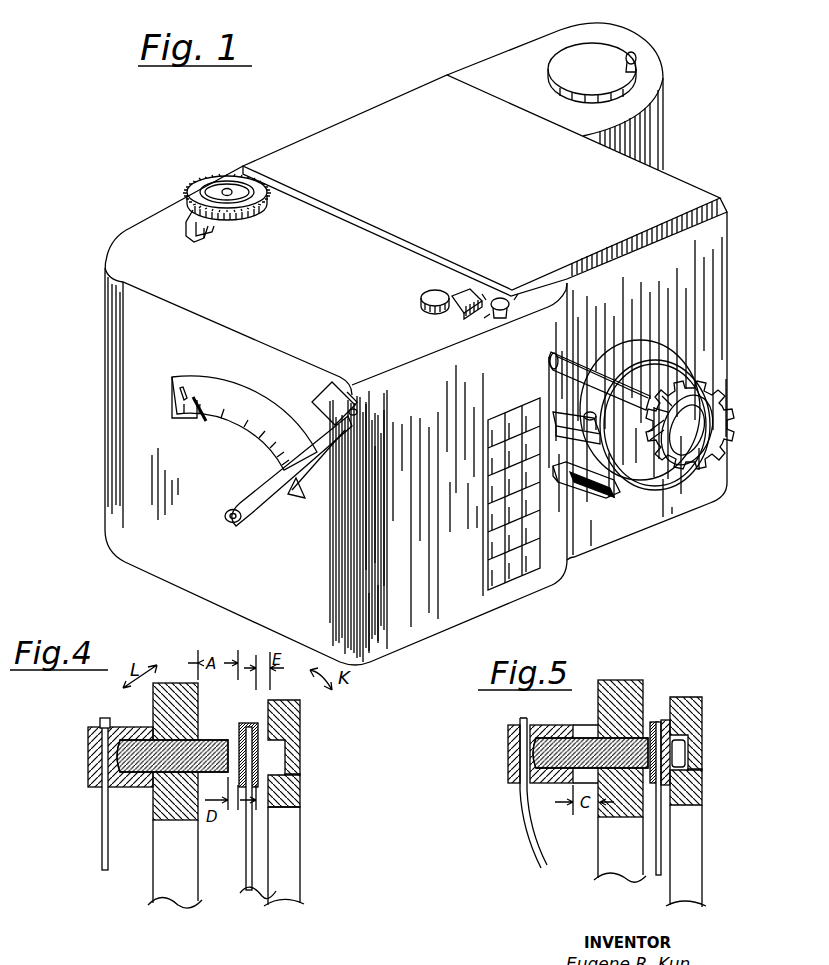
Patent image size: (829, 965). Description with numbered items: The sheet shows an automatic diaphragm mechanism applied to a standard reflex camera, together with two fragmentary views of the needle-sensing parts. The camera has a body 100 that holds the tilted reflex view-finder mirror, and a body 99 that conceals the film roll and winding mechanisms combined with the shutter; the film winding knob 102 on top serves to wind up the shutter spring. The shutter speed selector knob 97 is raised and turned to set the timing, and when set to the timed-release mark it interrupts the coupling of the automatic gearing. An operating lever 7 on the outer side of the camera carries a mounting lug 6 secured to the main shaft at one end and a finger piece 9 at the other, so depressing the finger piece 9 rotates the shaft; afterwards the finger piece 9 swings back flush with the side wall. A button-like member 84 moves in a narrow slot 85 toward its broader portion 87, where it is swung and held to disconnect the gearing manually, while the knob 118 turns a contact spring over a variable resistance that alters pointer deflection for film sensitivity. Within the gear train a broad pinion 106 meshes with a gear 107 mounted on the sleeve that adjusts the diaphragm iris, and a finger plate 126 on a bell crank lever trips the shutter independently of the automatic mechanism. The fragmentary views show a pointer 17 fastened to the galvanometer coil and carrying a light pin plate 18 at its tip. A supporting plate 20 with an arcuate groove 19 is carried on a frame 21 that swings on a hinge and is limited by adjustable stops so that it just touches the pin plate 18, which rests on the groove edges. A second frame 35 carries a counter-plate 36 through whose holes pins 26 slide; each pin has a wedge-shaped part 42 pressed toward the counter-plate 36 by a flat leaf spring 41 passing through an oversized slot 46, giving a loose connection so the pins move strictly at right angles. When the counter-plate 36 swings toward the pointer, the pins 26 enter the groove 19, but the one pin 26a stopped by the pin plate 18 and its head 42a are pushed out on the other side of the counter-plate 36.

In FIG. 1, the body of the camera 100 is at (715, 246).
In FIG. 1, the body 99 is at (655, 152).
In FIG. 1, the film winding knob 102 is at (605, 50).
In FIG. 1, the shutter speed selector knob 97 is at (202, 190).
In FIG. 1, the button-like member 84 is at (428, 296).
In FIG. 1, the narrow slot 85 is at (432, 312).
In FIG. 1, the broader portion of slot 87 is at (470, 316).
In FIG. 1, the knob 118 is at (510, 302).
In FIG. 1, the supporting plate 20 is at (215, 380).
In FIG. 4, the supporting plate 20 is at (292, 792).
In FIG. 5, the supporting plate 20 is at (692, 788).
In FIG. 1, the pointer 17 is at (198, 413).
In FIG. 4, the pointer 17 is at (249, 878).
In FIG. 5, the pointer 17 is at (657, 870).
In FIG. 1, the finger piece 9 is at (318, 402).
In FIG. 1, the operating lever 7 is at (256, 500).
In FIG. 1, the mounting lug 6 is at (227, 524).
In FIG. 1, the pinion 106 is at (652, 426).
In FIG. 1, the gear 107 is at (715, 432).
In FIG. 1, the actuating finger plate 126 is at (604, 498).
In FIG. 4, the counter-plate 36 is at (188, 706).
In FIG. 5, the counter-plate 36 is at (622, 684).
In FIG. 4, the second frame 35 is at (164, 888).
In FIG. 5, the second frame 35 is at (610, 850).
In FIG. 4, the pins 26 is at (136, 740).
In FIG. 5, the pins 26 is at (688, 758).
In FIG. 4, the wedge-shaped part 42 is at (88, 762).
In FIG. 5, the wedge-shaped part 42 is at (586, 728).
In FIG. 4, the flat leaf spring 41 is at (103, 852).
In FIG. 5, the flat leaf spring 41 is at (530, 820).
In FIG. 4, the oversized slot 46 is at (104, 720).
In FIG. 4, the pin plate 18 is at (240, 732).
In FIG. 5, the pin plate 18 is at (660, 720).
In FIG. 4, the arcuate groove 19 is at (295, 748).
In FIG. 5, the arcuate groove 19 is at (688, 740).
In FIG. 4, the frame 21 is at (294, 838).
In FIG. 5, the frame 21 is at (694, 828).
In FIG. 5, the head of stopped pin 42a is at (508, 740).
In FIG. 5, the stopped pin 26a is at (554, 740).